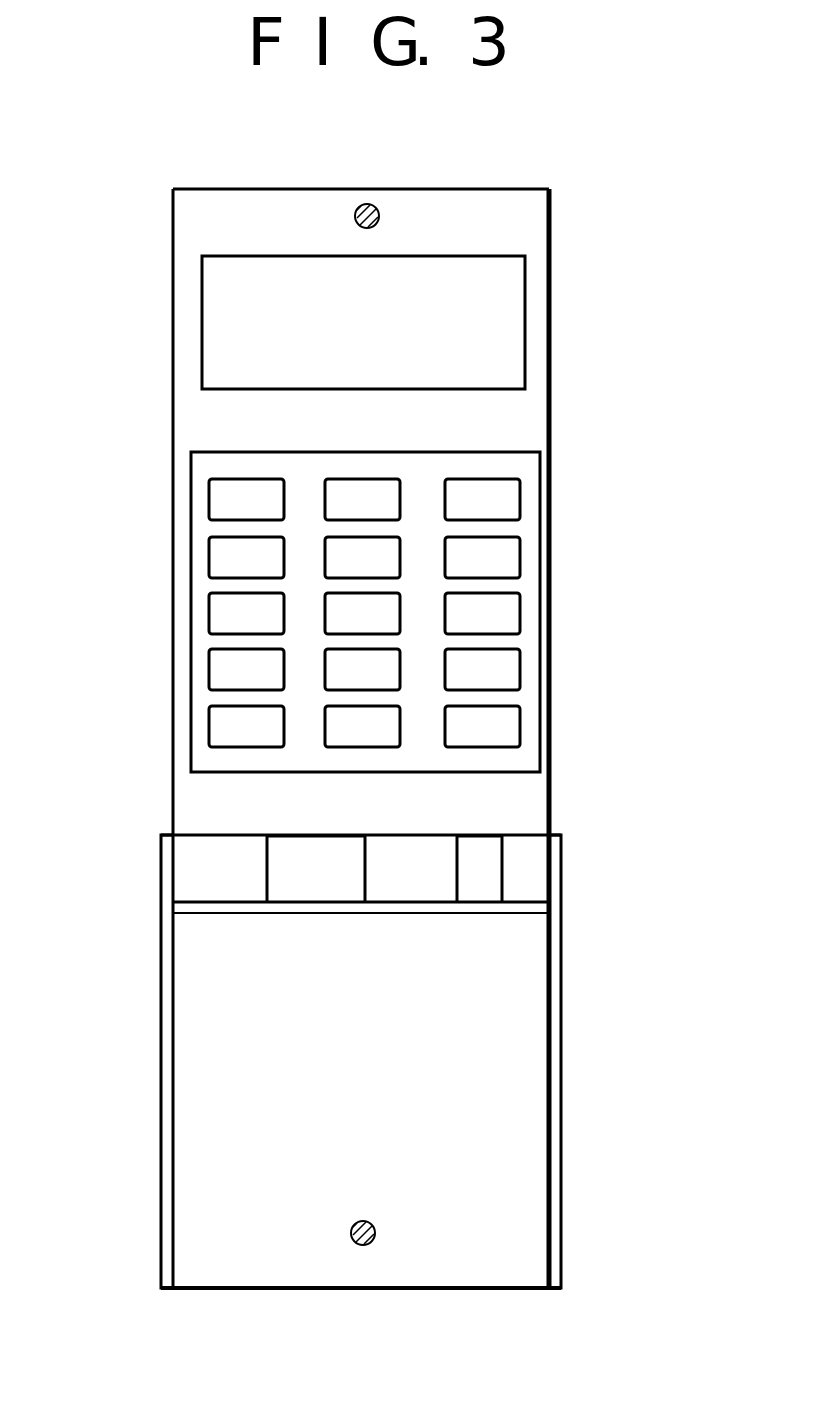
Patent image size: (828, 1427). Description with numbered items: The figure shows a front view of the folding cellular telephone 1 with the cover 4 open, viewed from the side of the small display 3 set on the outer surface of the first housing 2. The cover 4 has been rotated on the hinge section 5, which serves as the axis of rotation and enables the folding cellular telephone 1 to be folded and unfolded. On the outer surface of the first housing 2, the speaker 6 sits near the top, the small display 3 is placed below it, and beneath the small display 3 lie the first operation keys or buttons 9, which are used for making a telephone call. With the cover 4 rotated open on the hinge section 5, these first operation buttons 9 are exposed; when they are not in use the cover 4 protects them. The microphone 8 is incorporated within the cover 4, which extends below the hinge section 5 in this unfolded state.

The folding cellular telephone 1 is at (598, 1207).
The first housing 2 is at (208, 468).
The small display 3 is at (517, 327).
The cover 4 is at (202, 1050).
The hinge section 5 is at (533, 880).
The speaker 6 is at (377, 203).
The microphone 8 is at (362, 1247).
The first operation keys or buttons 9 is at (592, 452).